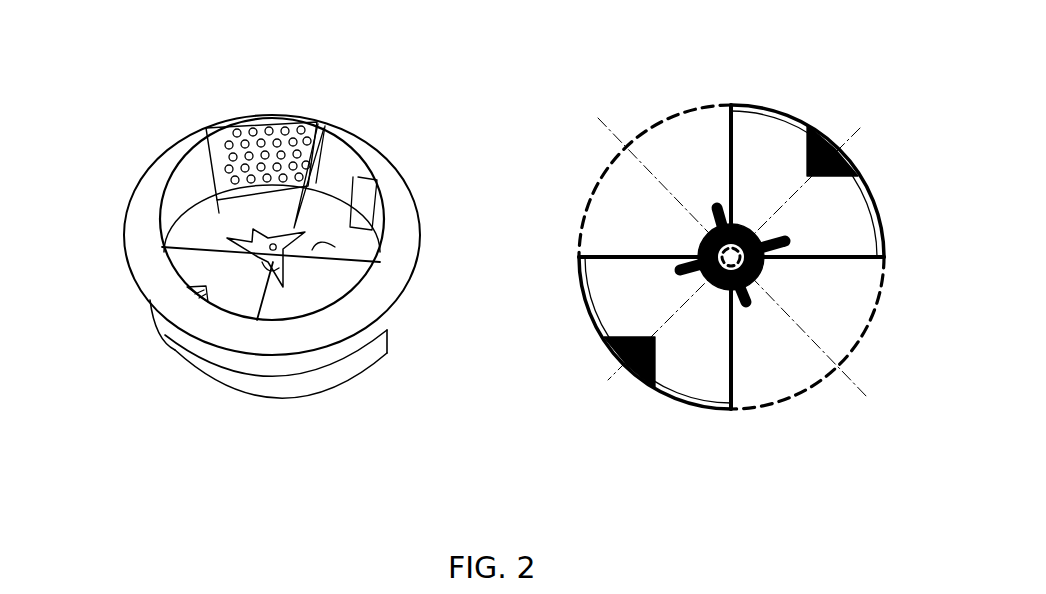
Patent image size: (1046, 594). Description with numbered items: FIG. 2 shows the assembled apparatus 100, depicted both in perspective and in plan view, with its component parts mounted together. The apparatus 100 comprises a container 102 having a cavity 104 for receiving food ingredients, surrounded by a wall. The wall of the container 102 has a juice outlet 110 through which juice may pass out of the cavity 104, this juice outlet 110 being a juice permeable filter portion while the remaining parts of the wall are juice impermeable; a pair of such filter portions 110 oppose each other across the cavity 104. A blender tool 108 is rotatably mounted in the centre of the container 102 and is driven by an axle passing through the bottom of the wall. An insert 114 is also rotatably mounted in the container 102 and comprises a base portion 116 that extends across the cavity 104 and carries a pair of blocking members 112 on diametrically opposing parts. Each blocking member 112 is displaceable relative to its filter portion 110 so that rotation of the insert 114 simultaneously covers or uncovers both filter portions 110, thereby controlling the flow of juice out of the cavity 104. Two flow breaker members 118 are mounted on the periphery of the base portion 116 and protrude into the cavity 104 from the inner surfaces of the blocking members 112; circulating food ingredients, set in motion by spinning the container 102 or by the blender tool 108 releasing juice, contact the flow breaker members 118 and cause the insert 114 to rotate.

The apparatus 100 is at (160, 80).
The container 102 is at (160, 297).
The cavity 104 is at (206, 130).
The blender tool 108 is at (297, 237).
The juice outlet 110 is at (262, 150).
The blocking member 112 is at (368, 237).
The insert 114 is at (240, 298).
The base portion 116 is at (310, 262).
The flow breaker member 118 is at (206, 294).